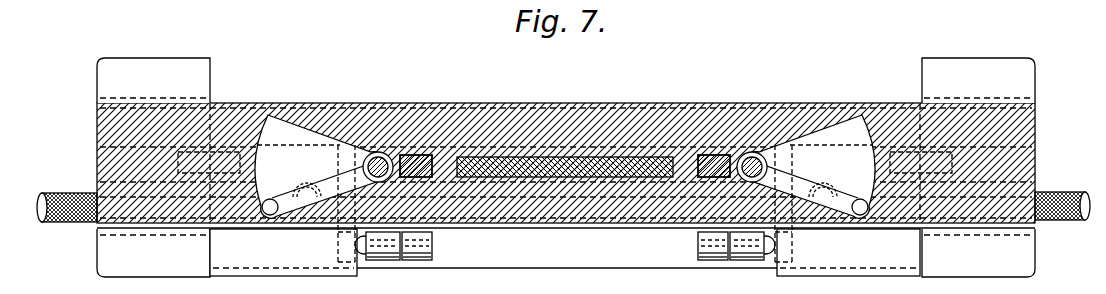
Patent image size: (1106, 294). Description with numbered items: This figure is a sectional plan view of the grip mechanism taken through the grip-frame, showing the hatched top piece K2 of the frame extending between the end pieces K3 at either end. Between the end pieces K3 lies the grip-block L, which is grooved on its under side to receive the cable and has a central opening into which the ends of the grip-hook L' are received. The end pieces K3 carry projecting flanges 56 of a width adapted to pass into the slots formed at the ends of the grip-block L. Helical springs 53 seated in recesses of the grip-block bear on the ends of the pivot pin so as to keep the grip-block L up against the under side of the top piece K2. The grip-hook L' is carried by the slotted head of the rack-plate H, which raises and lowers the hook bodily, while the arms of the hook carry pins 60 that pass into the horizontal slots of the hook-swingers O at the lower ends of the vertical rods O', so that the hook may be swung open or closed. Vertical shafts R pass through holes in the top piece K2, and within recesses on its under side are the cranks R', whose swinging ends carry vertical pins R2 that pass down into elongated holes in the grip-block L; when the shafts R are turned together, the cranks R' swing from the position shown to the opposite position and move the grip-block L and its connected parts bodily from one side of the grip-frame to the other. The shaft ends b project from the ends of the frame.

The end pieces K3 is at (566, 167).
The top piece K2 is at (380, 117).
The projecting flanges 56 is at (228, 160).
The shaft b is at (563, 195).
The vertical shafts R is at (553, 132).
The vertical rods O' is at (565, 122).
The rack-plate H is at (575, 157).
The grip-block L is at (565, 210).
The cranks R' is at (565, 176).
The vertical pins R2 is at (268, 203).
The springs 53 is at (565, 193).
The grip-hook L' is at (565, 263).
The hook-swingers O is at (565, 262).
The pins 60 is at (434, 246).